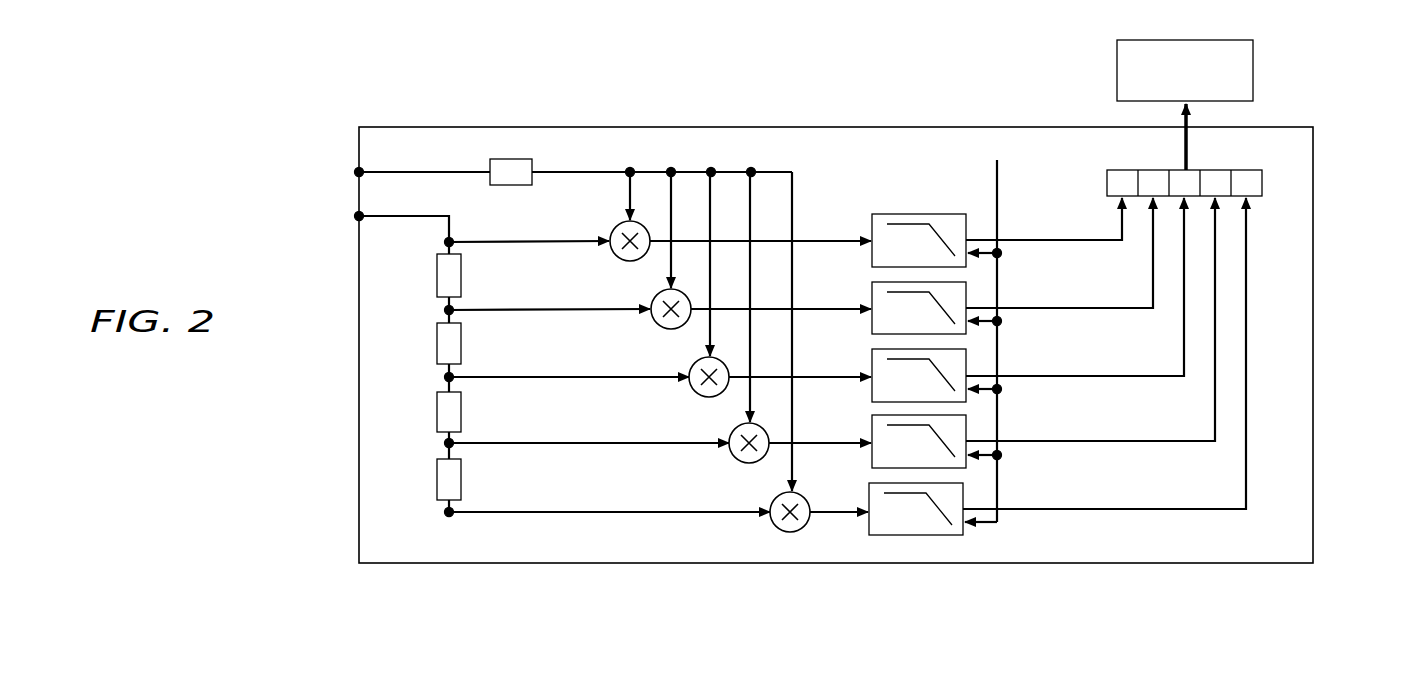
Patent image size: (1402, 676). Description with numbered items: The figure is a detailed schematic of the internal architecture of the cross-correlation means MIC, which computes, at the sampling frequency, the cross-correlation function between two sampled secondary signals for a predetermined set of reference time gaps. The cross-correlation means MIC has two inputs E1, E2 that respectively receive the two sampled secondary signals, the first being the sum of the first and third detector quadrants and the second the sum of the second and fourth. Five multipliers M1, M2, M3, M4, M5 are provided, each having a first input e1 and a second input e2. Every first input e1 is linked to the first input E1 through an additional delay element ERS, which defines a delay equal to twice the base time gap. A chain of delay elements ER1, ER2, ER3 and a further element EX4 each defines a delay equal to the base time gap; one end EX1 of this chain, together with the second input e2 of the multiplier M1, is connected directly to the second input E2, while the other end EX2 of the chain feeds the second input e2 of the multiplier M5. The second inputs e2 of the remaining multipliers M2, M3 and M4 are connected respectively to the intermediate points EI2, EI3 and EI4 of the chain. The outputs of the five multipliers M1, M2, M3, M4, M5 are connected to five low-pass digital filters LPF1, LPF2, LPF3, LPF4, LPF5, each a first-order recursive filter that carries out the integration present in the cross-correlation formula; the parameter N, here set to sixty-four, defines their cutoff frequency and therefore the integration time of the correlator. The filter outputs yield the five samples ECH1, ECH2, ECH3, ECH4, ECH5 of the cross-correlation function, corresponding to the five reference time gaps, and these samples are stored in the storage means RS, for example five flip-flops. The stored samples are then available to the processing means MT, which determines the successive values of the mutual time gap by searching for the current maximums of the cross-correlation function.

The cross-correlation means MIC is at (1316, 276).
The processing means MT is at (1256, 68).
The storage means RS is at (1200, 183).
The first input E1 is at (359, 172).
The second input E2 is at (359, 216).
The additional delay element ERS is at (510, 186).
The end of the chain of delay elements EX1 is at (449, 242).
The delay element ER1 is at (437, 275).
The intermediate point EI2 is at (449, 310).
The delay element ER2 is at (437, 345).
The intermediate point EI3 is at (449, 377).
The delay element ER3 is at (437, 413).
The intermediate point EI4 is at (449, 443).
The delay element EX4 is at (437, 480).
The other end of the chain of delay elements EX2 is at (449, 512).
The first input of multiplier e1 is at (636, 222).
The second input of multiplier e2 is at (612, 250).
The multiplier M1 is at (615, 228).
The multiplier M2 is at (656, 296).
The multiplier M3 is at (694, 364).
The multiplier M4 is at (734, 430).
The multiplier M5 is at (775, 498).
The low-pass digital filter LPF1 is at (919, 240).
The low-pass digital filter LPF2 is at (919, 308).
The low-pass digital filter LPF3 is at (919, 375).
The low-pass digital filter LPF4 is at (919, 441).
The low-pass digital filter LPF5 is at (916, 509).
The parameter N is at (984, 329).
The sample of the cross-correlation function ECH1 is at (1044, 219).
The sample of the cross-correlation function ECH2 is at (1059, 253).
The sample of the cross-correlation function ECH3 is at (1075, 287).
The sample of the cross-correlation function ECH4 is at (1090, 319).
The sample of the cross-correlation function ECH5 is at (1104, 353).